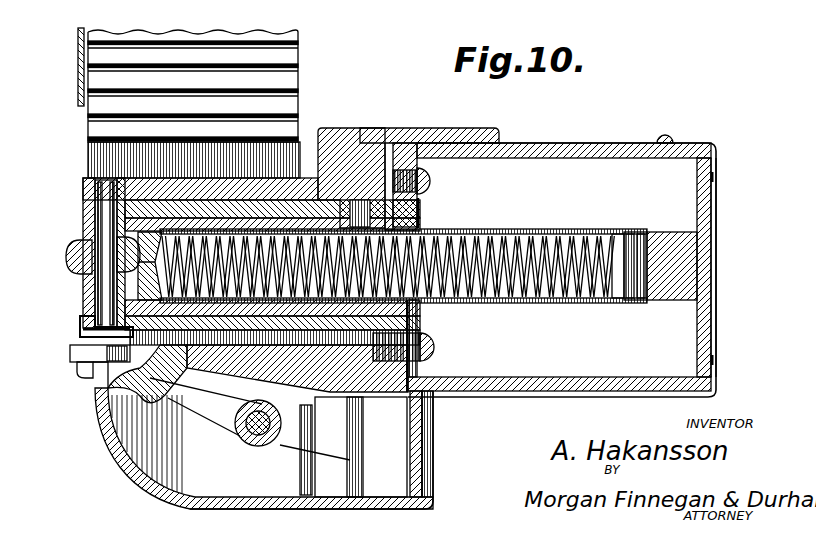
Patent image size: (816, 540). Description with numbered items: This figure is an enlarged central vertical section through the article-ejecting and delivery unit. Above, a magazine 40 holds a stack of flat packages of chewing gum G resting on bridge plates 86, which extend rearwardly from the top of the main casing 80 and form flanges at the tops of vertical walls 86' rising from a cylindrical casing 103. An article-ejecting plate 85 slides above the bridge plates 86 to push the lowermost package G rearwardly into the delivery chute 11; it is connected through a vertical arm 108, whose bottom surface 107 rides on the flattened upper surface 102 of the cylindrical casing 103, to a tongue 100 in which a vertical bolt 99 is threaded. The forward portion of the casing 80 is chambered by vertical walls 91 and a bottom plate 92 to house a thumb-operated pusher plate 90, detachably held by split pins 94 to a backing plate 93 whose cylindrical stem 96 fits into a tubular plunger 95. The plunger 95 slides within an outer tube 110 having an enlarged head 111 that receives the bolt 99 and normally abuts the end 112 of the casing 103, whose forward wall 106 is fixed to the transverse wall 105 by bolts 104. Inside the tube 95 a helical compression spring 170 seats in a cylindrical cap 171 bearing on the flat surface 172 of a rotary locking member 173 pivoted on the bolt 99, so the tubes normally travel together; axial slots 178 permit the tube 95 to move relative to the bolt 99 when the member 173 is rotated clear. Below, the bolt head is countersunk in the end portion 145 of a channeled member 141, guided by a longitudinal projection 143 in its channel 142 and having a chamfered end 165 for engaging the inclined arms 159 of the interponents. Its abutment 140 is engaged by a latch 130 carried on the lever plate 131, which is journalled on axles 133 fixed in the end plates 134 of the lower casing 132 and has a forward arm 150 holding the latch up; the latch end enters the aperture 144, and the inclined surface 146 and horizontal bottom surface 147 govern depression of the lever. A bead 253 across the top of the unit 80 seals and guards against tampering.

The delivery chute 11 is at (790, 262).
The package of chewing gum G is at (268, 77).
The magazine 40 is at (78, 45).
The main casing 80 is at (568, 142).
The article-ejecting plate 85 is at (437, 130).
The bridge plate 86 is at (318, 112).
The vertical wall 86' is at (66, 142).
The pusher plate 90 is at (716, 296).
The vertical wall 91 is at (604, 165).
The bottom plate 92 is at (537, 391).
The backing plate 93 is at (702, 312).
The split pin 94 is at (716, 178).
The tubular plunger 95 is at (553, 229).
The cylindrical stem 96 is at (658, 244).
The vertical bolt 99 is at (95, 180).
The tongue 100 is at (175, 190).
The upper surface 102 is at (226, 178).
The cylindrical casing 103 is at (430, 220).
The bolt 104 is at (437, 177).
The transverse wall 105 is at (482, 142).
The forward wall 106 is at (400, 150).
The bottom surface 107 is at (368, 158).
The vertical arm 108 is at (222, 160).
The outer tube 110 is at (380, 222).
The enlarged head 111 is at (74, 312).
The end of casing 112 is at (140, 185).
The latch 130 is at (160, 384).
The lever plate 131 is at (215, 396).
The casing 132 is at (128, 466).
The axle 133 is at (262, 432).
The end plate 134 is at (182, 504).
The abutment 140 is at (196, 418).
The channeled member 141 is at (424, 452).
The channel 142 is at (424, 334).
The longitudinal projection 143 is at (434, 406).
The aperture 144 is at (95, 378).
The end portion 145 is at (75, 346).
The inclined surface 146 is at (274, 440).
The horizontal bottom surface 147 is at (358, 455).
The arm 150 is at (305, 462).
The inclined arm 159 is at (78, 372).
The chamfered end 165 is at (152, 360).
The helical compression spring 170 is at (522, 300).
The cylindrical cap 171 is at (208, 308).
The flat surface 172 is at (102, 278).
The rotary locking member 173 is at (80, 275).
The axial slot 178 is at (146, 180).
The bead 253 is at (668, 138).